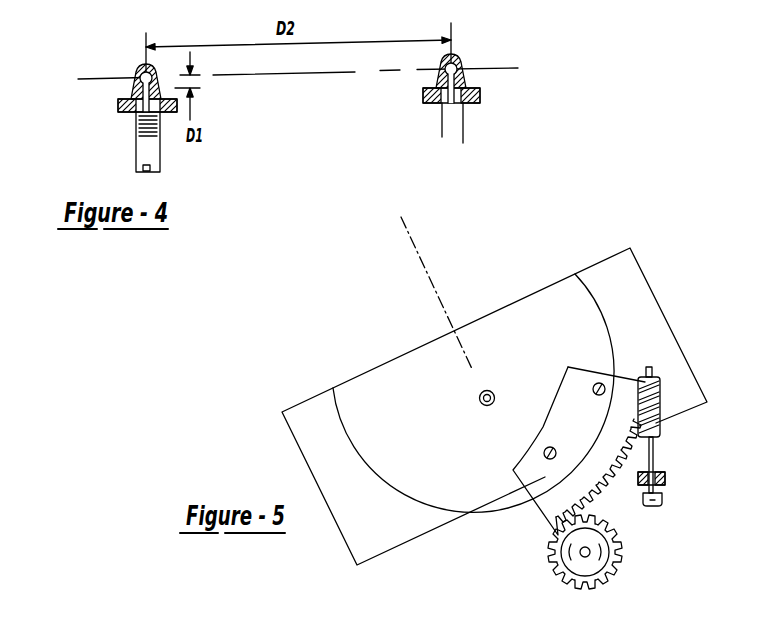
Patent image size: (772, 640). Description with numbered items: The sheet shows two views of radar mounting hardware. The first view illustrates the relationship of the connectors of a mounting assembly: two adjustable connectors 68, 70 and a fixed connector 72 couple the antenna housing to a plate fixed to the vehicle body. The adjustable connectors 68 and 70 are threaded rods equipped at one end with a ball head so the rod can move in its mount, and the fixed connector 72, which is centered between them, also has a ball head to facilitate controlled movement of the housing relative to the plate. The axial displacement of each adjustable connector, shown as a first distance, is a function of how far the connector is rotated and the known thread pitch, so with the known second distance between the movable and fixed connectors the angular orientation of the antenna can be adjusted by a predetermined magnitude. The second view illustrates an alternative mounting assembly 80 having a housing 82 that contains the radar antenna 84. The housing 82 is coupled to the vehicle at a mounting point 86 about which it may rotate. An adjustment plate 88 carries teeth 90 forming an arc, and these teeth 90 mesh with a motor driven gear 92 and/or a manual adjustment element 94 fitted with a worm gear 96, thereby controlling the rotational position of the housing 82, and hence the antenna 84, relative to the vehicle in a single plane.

In FIG. 4, the adjustable connector 68 is at (110, 102).
In FIG. 4, the adjustable connector 70 is at (146, 153).
In FIG. 4, the fixed connector 72 is at (450, 123).
In FIG. 5, the alternative mounting assembly 80 is at (645, 220).
In FIG. 5, the housing 82 is at (647, 322).
In FIG. 5, the radar antenna 84 is at (407, 231).
In FIG. 5, the mounting point 86 is at (478, 402).
In FIG. 5, the adjustment plate 88 is at (547, 495).
In FIG. 5, the teeth 90 is at (607, 478).
In FIG. 5, the motor driven gear 92 is at (572, 557).
In FIG. 5, the manual adjustment element 94 is at (692, 436).
In FIG. 5, the worm gear 96 is at (658, 403).